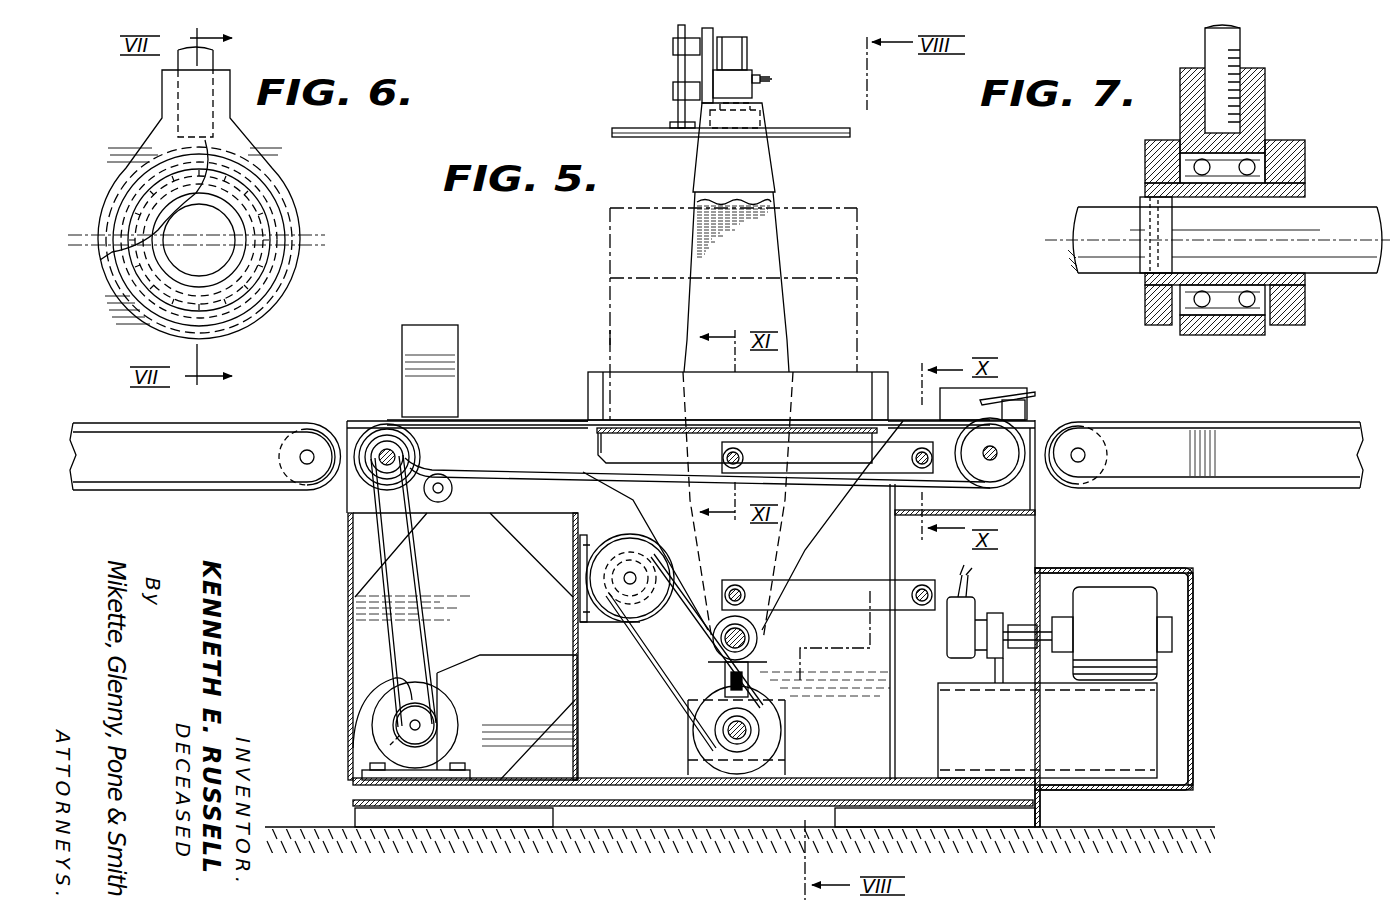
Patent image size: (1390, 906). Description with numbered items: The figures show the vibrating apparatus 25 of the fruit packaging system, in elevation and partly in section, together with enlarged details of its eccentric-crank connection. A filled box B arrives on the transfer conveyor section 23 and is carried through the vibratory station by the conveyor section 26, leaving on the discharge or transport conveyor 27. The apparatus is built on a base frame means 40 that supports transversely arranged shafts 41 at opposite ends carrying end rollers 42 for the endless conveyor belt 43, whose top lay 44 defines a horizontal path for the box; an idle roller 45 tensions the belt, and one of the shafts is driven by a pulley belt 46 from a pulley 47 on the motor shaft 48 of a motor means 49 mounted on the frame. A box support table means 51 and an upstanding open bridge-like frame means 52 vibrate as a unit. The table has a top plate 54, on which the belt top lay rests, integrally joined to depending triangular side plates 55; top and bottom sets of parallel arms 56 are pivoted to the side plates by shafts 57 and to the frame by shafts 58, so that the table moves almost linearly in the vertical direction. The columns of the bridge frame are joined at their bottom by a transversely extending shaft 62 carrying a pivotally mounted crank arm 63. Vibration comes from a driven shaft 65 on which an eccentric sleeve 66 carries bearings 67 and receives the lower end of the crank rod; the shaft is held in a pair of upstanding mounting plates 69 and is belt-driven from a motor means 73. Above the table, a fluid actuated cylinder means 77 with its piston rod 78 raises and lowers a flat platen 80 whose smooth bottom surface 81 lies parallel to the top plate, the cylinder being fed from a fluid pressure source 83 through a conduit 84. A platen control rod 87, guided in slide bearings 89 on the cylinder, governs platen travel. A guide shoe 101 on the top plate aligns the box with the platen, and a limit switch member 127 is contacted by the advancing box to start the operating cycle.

In FIG. 5, the transfer conveyor section 23 is at (1258, 422).
In FIG. 5, the vibrating apparatus 25 is at (600, 332).
In FIG. 5, the conveyor section 26 is at (562, 412).
In FIG. 5, the discharge or transport conveyor 27 is at (205, 425).
In FIG. 5, the base frame means 40 is at (346, 640).
In FIG. 5, the shafts 41 is at (388, 450).
In FIG. 5, the end rollers 42 is at (365, 440).
In FIG. 5, the endless conveyor belt 43 is at (478, 472).
In FIG. 5, the top lay 44 is at (503, 424).
In FIG. 5, the idle roller 45 is at (452, 490).
In FIG. 5, the pulley belt 46 is at (382, 565).
In FIG. 5, the pulley 47 is at (408, 712).
In FIG. 5, the motor shaft 48 is at (410, 725).
In FIG. 5, the motor means 49 is at (380, 750).
In FIG. 5, the box support table means 51 is at (800, 430).
In FIG. 5, the upstanding open bridge-like frame means 52 is at (710, 175).
In FIG. 5, the top plate 54 is at (660, 432).
In FIG. 5, the side plates 55 is at (805, 525).
In FIG. 5, the parallel arms 56 is at (828, 526).
In FIG. 5, the shafts 57 is at (724, 460).
In FIG. 5, the shafts 58 is at (926, 450).
In FIG. 5, the transversely extending shaft 62 is at (745, 640).
In FIG. 6, the crank arm 63 is at (212, 58).
In FIG. 7, the crank arm 63 is at (1222, 48).
In FIG. 5, the crank arm 63 is at (725, 680).
In FIG. 6, the driven shaft 65 is at (212, 260).
In FIG. 7, the driven shaft 65 is at (1115, 222).
In FIG. 5, the driven shaft 65 is at (748, 730).
In FIG. 6, the eccentric sleeve 66 is at (132, 276).
In FIG. 7, the eccentric sleeve 66 is at (1287, 191).
In FIG. 6, the bearings 67 is at (255, 218).
In FIG. 7, the bearings 67 is at (1262, 156).
In FIG. 5, the mounting plates 69 is at (780, 752).
In FIG. 5, the motor means 73 is at (620, 548).
In FIG. 5, the fluid actuated cylinder means 77 is at (752, 46).
In FIG. 5, the piston rod 78 is at (762, 115).
In FIG. 5, the platen 80 is at (648, 128).
In FIG. 5, the bottom surface 81 is at (818, 137).
In FIG. 5, the fluid pressure source 83 is at (1055, 682).
In FIG. 5, the conduit 84 is at (772, 79).
In FIG. 5, the platen control rod 87 is at (678, 70).
In FIG. 5, the slide bearings 89 is at (673, 47).
In FIG. 5, the guide shoe 101 is at (797, 384).
In FIG. 5, the limit switch member 127 is at (995, 392).
In FIG. 5, the box B is at (857, 292).